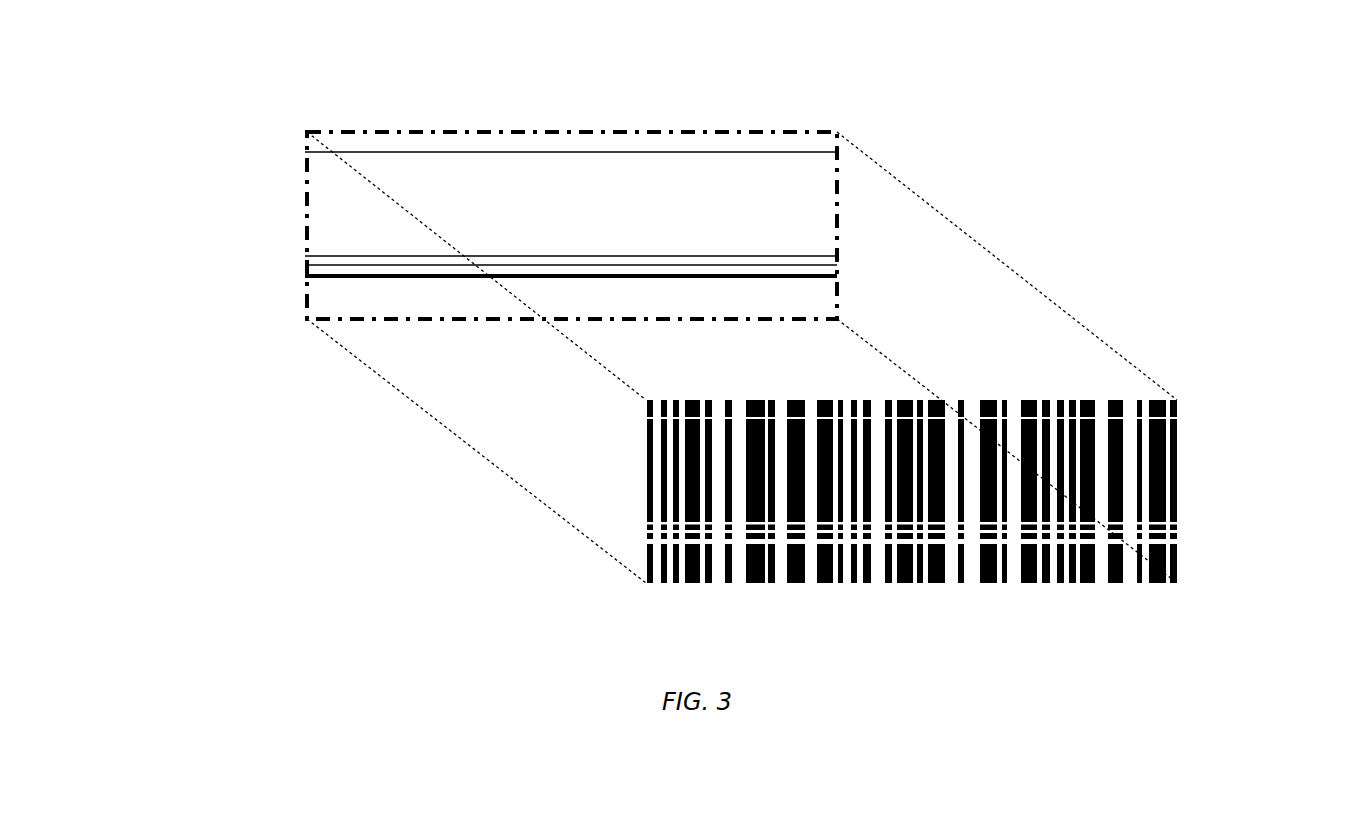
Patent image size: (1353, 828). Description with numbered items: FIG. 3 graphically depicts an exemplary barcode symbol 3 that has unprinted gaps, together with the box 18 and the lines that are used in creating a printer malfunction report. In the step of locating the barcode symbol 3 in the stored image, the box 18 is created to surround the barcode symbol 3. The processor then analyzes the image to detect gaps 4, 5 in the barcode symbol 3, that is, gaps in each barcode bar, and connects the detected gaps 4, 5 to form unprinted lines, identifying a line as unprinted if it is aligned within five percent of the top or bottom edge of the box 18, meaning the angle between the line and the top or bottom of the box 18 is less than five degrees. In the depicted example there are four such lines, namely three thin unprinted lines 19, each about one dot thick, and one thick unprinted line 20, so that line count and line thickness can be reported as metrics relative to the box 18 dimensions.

The box 18 is at (596, 124).
The thin unprinted line 19 is at (282, 265).
The thick unprinted line 20 is at (282, 277).
The barcode symbol 3 is at (981, 392).
The gap 4 is at (1190, 532).
The gap 5 is at (1190, 542).